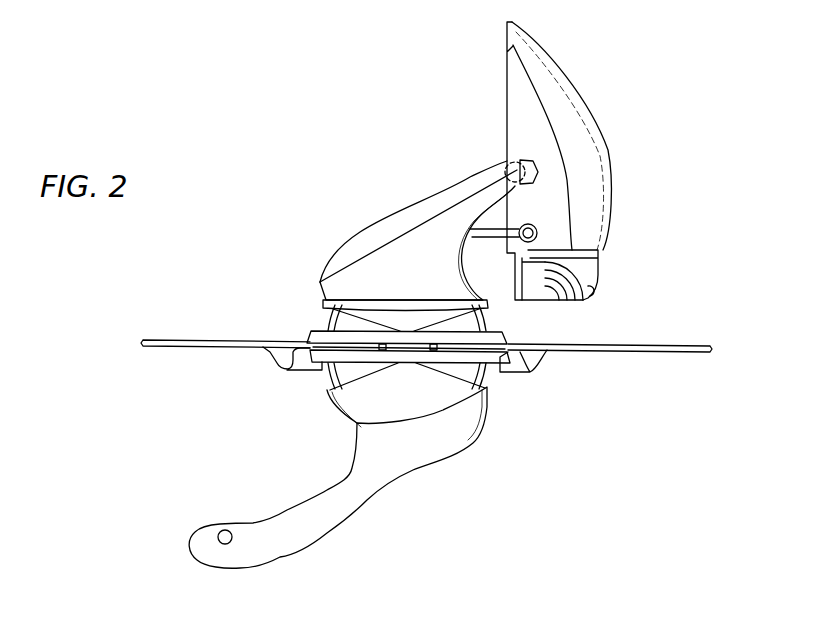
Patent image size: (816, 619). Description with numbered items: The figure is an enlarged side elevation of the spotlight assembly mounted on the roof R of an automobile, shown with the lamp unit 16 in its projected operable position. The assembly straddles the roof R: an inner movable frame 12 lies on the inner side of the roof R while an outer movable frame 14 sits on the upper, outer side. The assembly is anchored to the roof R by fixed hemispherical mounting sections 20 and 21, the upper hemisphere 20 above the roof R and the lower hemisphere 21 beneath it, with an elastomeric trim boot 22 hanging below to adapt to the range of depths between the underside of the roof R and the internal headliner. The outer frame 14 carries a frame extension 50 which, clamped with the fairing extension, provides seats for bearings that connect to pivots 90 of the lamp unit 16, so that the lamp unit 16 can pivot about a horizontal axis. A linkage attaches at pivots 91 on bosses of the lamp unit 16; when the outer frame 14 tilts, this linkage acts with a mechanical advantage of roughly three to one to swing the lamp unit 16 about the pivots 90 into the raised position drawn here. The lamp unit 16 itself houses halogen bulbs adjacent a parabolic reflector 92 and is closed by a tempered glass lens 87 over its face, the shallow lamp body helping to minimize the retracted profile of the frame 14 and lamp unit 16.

The inner movable frame 12 is at (484, 451).
The outer movable frame 14 is at (418, 240).
The lamp unit 16 is at (583, 136).
The hemispherical mounting section 20 is at (328, 322).
The hemispherical mounting section 21 is at (330, 380).
The trim boot 22 is at (270, 356).
The frame extension 50 is at (440, 198).
The tempered glass lens 87 is at (506, 80).
The pivot 90 is at (510, 166).
The pivot 91 is at (511, 216).
The parabolic reflector 92 is at (546, 68).
The roof R is at (666, 345).